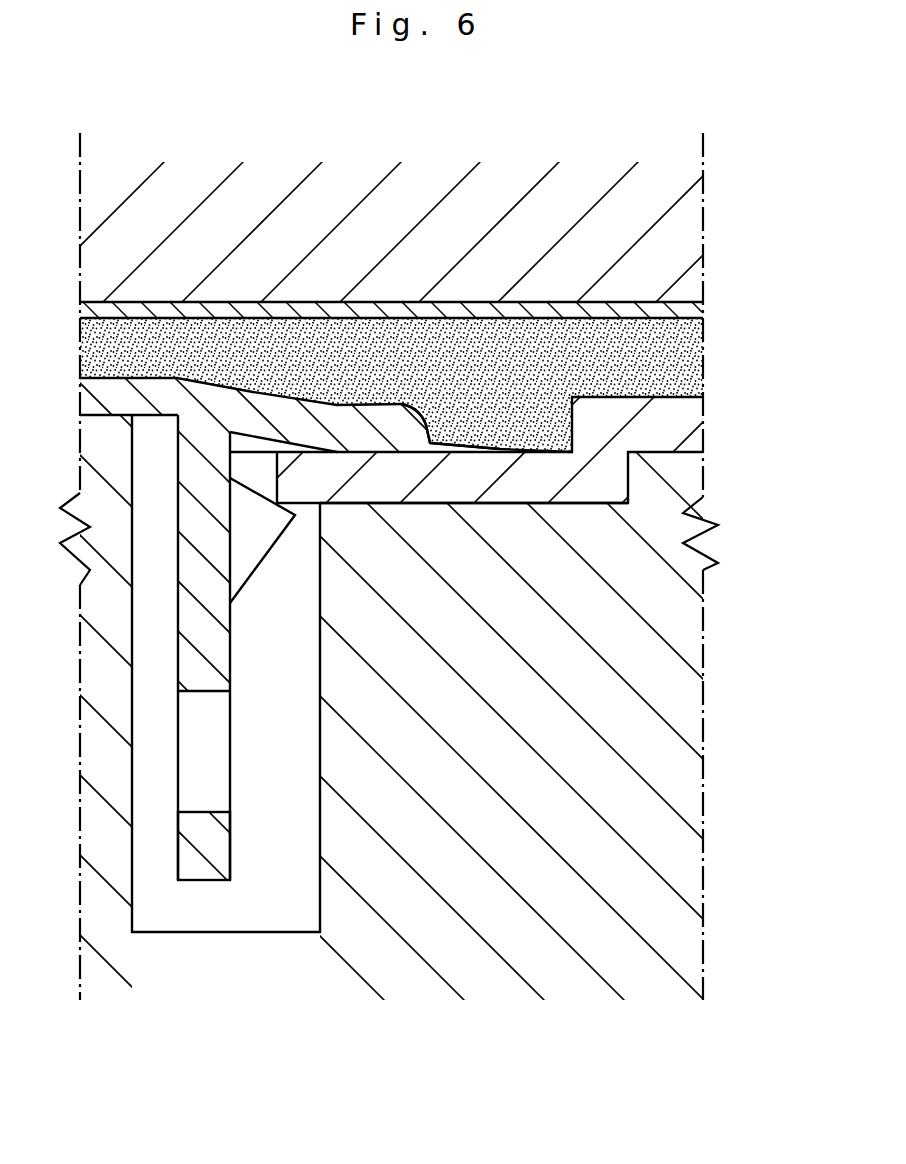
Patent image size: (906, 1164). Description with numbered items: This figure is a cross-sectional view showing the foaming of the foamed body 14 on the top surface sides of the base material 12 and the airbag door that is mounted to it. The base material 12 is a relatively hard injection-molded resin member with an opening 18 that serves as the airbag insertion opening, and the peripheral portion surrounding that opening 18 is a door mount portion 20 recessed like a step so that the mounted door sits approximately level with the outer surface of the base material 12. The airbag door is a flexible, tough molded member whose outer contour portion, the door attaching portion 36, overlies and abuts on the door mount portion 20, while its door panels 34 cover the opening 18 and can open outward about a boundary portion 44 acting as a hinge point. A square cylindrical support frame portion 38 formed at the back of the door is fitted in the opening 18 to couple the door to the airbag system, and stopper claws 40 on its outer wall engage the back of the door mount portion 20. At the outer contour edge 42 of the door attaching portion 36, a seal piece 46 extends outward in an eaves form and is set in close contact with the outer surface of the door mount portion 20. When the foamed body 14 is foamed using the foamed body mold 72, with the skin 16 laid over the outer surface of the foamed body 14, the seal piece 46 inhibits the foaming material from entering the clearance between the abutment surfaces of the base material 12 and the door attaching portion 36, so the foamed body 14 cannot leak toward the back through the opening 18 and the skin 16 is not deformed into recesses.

The base material 12 is at (474, 805).
The foamed body 14 is at (443, 370).
The skin 16 is at (391, 191).
The opening 18 is at (262, 472).
The door mount portion 20 is at (490, 307).
The door panels 34 is at (453, 583).
The door attaching portion 36 is at (296, 258).
The support frame portion 38 is at (195, 963).
The stopper claws 40 is at (226, 765).
The outer contour edge 42 is at (440, 253).
The boundary portion 44 is at (196, 472).
The seal piece 46 is at (500, 256).
The foamed body mold 72 is at (453, 582).